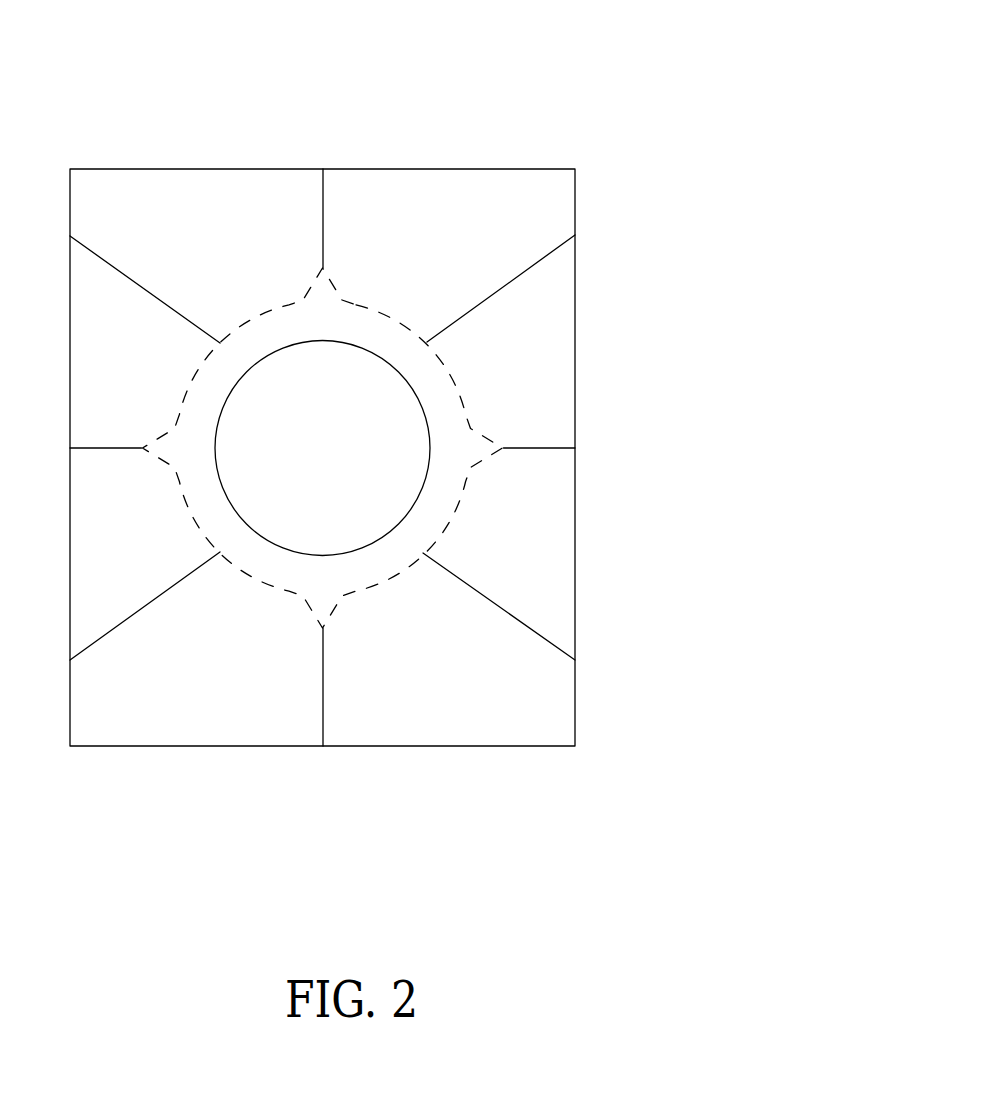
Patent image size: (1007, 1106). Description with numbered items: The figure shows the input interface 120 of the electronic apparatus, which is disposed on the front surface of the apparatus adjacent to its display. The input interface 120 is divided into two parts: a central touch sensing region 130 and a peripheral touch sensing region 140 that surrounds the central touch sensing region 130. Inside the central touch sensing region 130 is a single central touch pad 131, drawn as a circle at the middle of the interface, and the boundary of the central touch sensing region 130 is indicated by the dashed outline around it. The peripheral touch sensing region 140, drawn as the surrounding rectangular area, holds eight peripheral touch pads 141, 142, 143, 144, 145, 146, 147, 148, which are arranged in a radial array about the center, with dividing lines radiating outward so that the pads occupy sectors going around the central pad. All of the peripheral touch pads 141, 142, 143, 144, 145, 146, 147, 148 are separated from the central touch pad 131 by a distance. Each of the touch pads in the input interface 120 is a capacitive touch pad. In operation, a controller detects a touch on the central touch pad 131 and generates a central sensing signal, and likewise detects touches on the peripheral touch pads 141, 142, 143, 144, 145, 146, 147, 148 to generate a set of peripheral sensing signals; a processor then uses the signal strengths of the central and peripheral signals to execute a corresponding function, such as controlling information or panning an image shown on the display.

The input interface 120 is at (549, 104).
The central touch sensing region 130 is at (285, 575).
The central touch pad 131 is at (348, 466).
The peripheral touch sensing region 140 is at (172, 746).
The peripheral touch pad 141 is at (548, 376).
The peripheral touch pad 142 is at (544, 556).
The peripheral touch pad 143 is at (459, 683).
The peripheral touch pad 144 is at (236, 683).
The peripheral touch pad 145 is at (149, 556).
The peripheral touch pad 146 is at (148, 373).
The peripheral touch pad 147 is at (231, 248).
The peripheral touch pad 148 is at (460, 246).